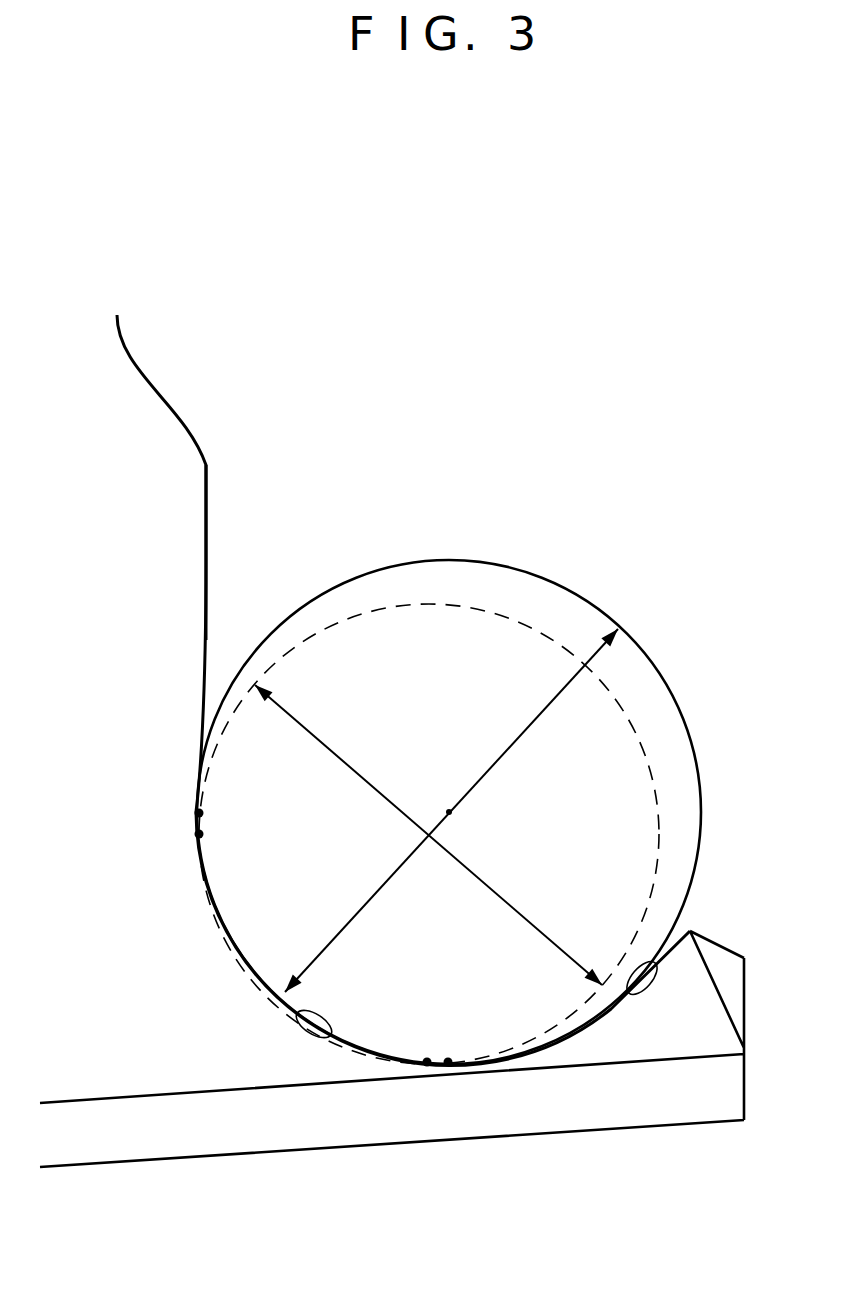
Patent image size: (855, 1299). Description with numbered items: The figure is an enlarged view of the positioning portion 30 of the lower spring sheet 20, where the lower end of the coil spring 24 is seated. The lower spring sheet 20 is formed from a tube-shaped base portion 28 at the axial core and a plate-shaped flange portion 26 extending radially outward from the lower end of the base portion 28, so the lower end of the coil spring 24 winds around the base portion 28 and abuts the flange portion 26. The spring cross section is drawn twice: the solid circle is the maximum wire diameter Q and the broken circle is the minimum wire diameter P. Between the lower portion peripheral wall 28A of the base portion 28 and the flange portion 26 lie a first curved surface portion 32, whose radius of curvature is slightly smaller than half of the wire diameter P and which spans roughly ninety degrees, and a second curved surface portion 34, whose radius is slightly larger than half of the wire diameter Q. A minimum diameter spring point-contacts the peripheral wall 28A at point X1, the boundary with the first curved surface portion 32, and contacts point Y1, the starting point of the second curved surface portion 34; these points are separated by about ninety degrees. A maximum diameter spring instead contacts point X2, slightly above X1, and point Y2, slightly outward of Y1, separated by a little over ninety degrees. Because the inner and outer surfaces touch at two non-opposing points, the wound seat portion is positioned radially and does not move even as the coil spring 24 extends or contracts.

The lower spring sheet 20 is at (403, 670).
The coil spring 24 is at (453, 604).
The flange portion 26 is at (98, 1143).
The base portion 28 is at (403, 690).
The lower portion peripheral wall 28A is at (197, 632).
The positioning portions 30 is at (498, 1101).
The first curved surface portion 32 is at (325, 1040).
The second curved surface portion 34 is at (633, 995).
The point X1 is at (199, 834).
The point X2 is at (199, 813).
The point Y1 is at (427, 1062).
The point Y2 is at (448, 1062).
The wire diameter P is at (528, 922).
The wire diameter Q is at (518, 738).